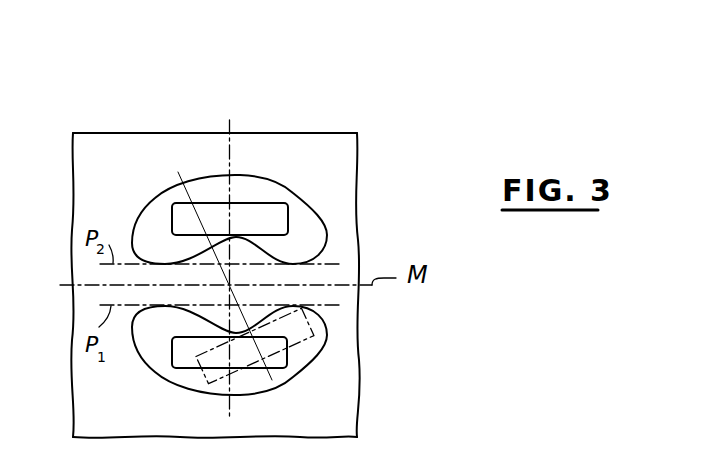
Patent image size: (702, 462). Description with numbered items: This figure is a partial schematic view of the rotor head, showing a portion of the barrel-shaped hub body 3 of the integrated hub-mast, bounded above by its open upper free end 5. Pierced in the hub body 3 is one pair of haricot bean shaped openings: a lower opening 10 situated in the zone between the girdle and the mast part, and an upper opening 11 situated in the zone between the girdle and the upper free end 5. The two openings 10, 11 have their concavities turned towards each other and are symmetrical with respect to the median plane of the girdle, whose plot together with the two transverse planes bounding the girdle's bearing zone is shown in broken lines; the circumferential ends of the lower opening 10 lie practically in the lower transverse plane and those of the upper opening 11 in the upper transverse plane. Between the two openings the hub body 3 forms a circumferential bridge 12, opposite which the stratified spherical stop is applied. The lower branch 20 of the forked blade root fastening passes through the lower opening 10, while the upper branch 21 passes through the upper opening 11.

The hub body 3 is at (357, 237).
The upper free end 5 is at (153, 147).
The lower opening 10 is at (150, 348).
The upper opening 11 is at (148, 230).
The bridge 12 is at (253, 273).
The lower branch 20 is at (185, 360).
The upper branch 21 is at (248, 210).